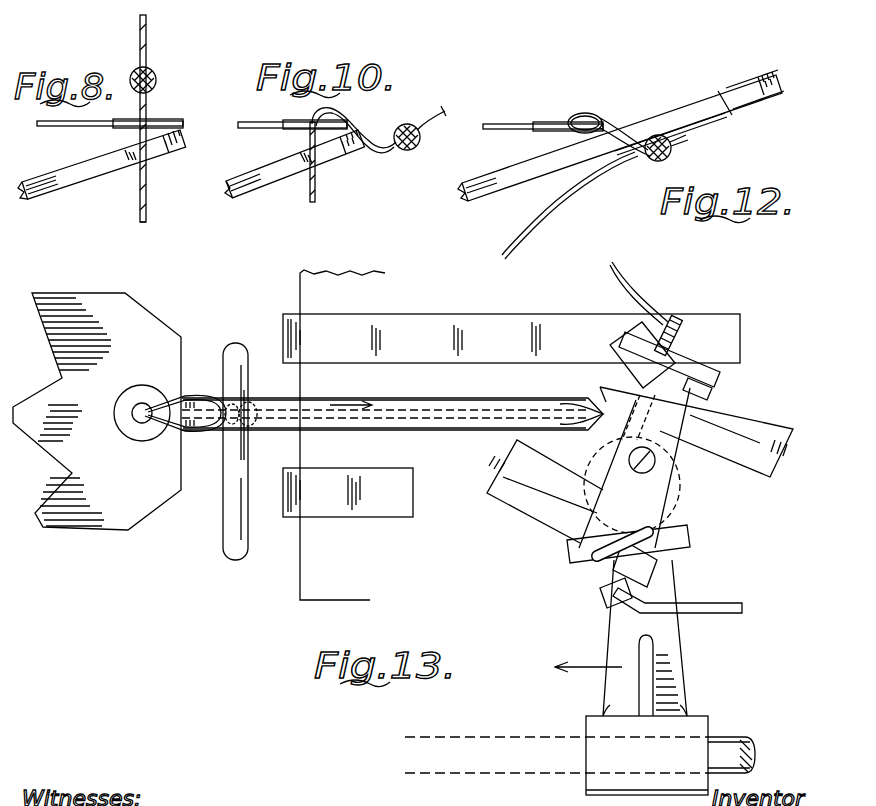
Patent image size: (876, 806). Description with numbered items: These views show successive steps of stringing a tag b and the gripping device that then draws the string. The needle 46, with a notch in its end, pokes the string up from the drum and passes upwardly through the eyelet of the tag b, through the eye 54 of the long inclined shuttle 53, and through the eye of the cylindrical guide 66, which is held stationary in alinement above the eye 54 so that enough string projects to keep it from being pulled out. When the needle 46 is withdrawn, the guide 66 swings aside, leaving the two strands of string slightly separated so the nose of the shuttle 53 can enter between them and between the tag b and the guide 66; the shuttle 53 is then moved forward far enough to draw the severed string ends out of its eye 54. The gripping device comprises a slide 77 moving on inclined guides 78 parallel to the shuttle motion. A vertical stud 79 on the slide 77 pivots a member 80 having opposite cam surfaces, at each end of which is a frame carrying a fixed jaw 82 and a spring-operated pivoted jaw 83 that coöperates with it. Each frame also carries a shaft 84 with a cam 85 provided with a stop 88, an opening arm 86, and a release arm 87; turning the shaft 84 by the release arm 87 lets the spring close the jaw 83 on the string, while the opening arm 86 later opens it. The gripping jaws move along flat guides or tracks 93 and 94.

In FIG. 8, the needle 46 is at (147, 40).
In FIG. 8, the shuttle 53 is at (55, 198).
In FIG. 10, the shuttle 53 is at (277, 181).
In FIG. 12, the shuttle 53 is at (488, 186).
In FIG. 13, the shuttle 53 is at (331, 398).
In FIG. 8, the eye 54 is at (133, 172).
In FIG. 10, the eye 54 is at (326, 158).
In FIG. 12, the eye 54 is at (740, 92).
In FIG. 8, the cylindrical guide 66 is at (156, 76).
In FIG. 10, the cylindrical guide 66 is at (420, 142).
In FIG. 12, the cylindrical guide 66 is at (672, 152).
In FIG. 13, the cylindrical guide 66 is at (233, 537).
In FIG. 13, the slide 77 is at (680, 648).
In FIG. 13, the guides 78 is at (728, 745).
In FIG. 13, the vertical stud 79 is at (656, 465).
In FIG. 13, the member 80 is at (618, 466).
In FIG. 13, the jaw 82 is at (780, 524).
In FIG. 13, the jaw 83 is at (762, 448).
In FIG. 13, the shaft 84 is at (604, 386).
In FIG. 13, the cam 85 is at (638, 356).
In FIG. 13, the opening arm 86 is at (628, 282).
In FIG. 13, the release arm 87 is at (684, 346).
In FIG. 13, the stop 88 is at (700, 389).
In FIG. 13, the flat guide or track 93 is at (313, 510).
In FIG. 13, the flat guide or track 94 is at (428, 322).
In FIG. 8, the wire a is at (144, 212).
In FIG. 10, the wire a is at (316, 203).
In FIG. 12, the wire a is at (553, 190).
In FIG. 13, the wire a is at (185, 397).
In FIG. 8, the tag b is at (55, 126).
In FIG. 10, the tag b is at (257, 129).
In FIG. 12, the tag b is at (507, 126).
In FIG. 13, the tag b is at (165, 330).